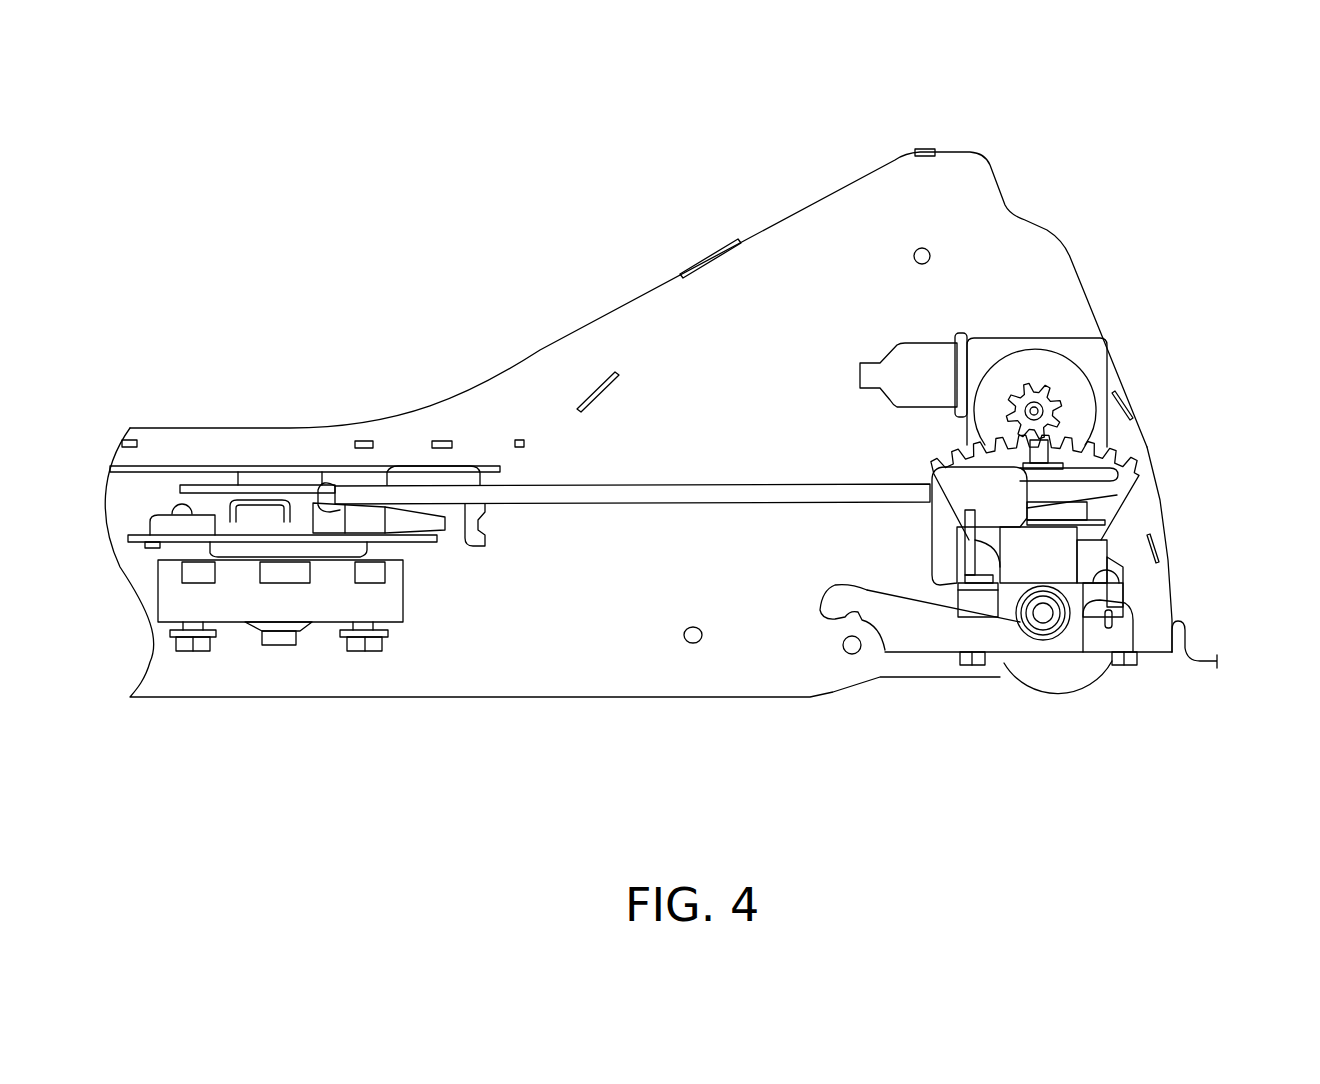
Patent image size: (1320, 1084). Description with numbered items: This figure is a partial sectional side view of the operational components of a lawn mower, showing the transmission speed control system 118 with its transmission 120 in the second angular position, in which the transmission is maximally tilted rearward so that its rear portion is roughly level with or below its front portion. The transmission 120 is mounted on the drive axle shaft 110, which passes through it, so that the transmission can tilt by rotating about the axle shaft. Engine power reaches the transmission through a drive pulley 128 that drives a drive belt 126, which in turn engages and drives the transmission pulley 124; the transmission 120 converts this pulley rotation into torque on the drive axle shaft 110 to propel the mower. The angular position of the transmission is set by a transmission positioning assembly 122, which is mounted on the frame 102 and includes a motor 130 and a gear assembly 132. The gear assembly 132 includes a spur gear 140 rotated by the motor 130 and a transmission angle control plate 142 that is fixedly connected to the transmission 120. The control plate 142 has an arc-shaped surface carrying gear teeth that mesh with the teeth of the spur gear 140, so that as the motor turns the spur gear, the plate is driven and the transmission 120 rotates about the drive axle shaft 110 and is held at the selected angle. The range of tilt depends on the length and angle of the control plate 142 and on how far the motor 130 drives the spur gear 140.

The frame 102 is at (823, 227).
The drive axle shaft 110 is at (1043, 617).
The transmission speed control system 118 is at (1223, 323).
The transmission 120 is at (1017, 578).
The transmission positioning assembly 122 is at (1032, 320).
The transmission pulley 124 is at (1100, 475).
The drive belt 126 is at (615, 495).
The drive pulley 128 is at (283, 497).
The motor 130 is at (922, 357).
The gear assembly 132 is at (1127, 370).
The spur gear 140 is at (1020, 393).
The transmission angle control plate 142 is at (947, 455).